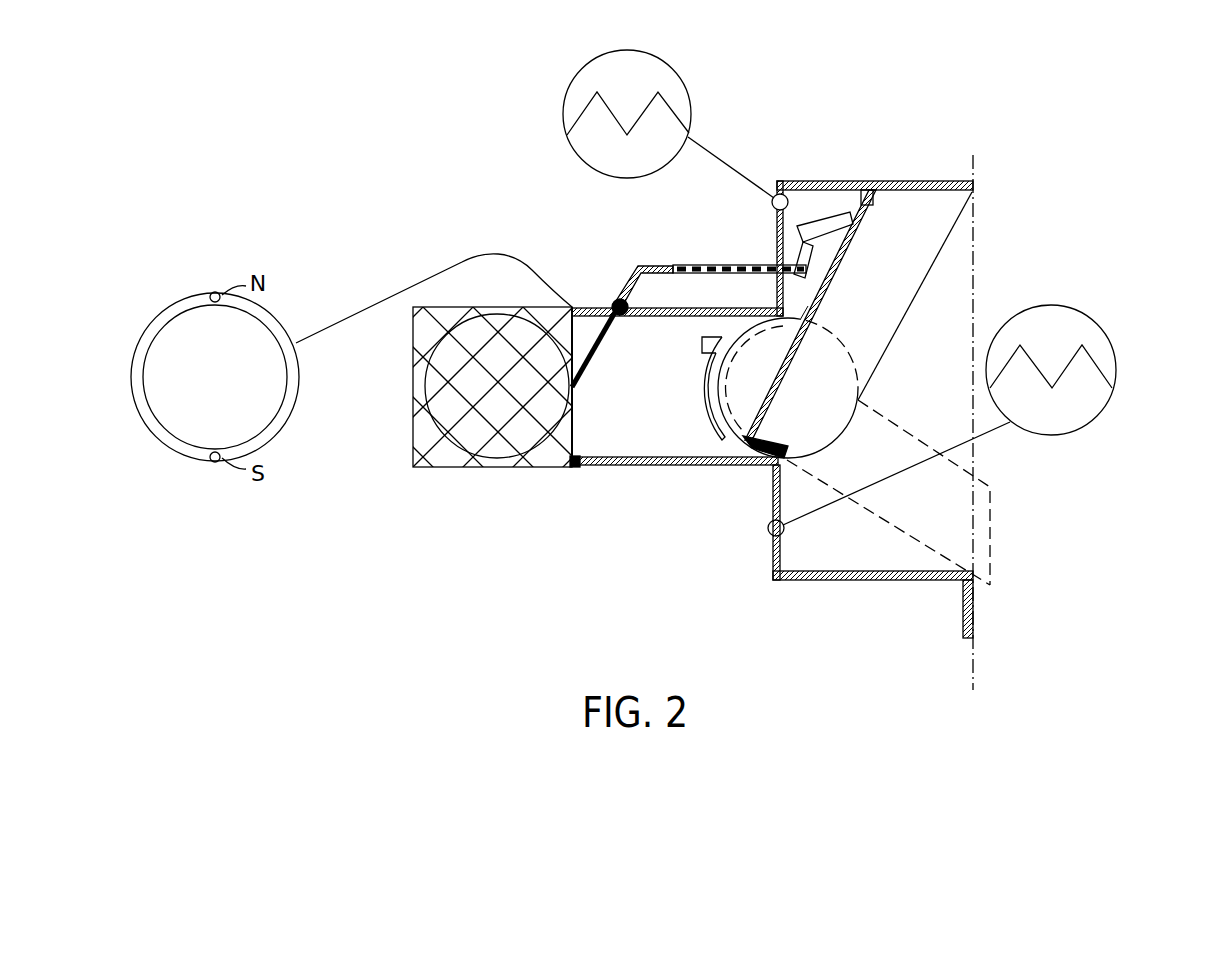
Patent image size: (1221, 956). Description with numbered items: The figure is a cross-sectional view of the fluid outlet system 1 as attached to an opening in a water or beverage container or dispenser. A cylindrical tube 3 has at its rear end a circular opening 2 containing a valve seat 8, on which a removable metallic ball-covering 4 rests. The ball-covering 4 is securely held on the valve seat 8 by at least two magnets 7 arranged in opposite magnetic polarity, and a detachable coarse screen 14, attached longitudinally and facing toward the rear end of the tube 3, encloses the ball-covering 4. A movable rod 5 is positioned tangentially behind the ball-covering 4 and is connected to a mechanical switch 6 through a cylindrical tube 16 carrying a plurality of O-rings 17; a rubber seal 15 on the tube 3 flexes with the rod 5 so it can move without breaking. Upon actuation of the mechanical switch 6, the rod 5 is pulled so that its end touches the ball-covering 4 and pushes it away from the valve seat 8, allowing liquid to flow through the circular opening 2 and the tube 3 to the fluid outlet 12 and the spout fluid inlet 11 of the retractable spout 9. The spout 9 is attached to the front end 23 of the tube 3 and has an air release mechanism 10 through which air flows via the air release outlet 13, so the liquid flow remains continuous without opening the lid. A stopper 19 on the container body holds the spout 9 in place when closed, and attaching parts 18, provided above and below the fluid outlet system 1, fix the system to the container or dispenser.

The fluid outlet system 1 is at (1021, 226).
The circular opening 2 is at (553, 456).
The cylindrical tube 3 is at (668, 447).
The removable metallic ball-covering 4 is at (417, 443).
The movable rod 5 is at (594, 352).
The mechanical switch 6 is at (800, 222).
The magnets 7 is at (575, 468).
The valve seat 8 is at (571, 412).
The retractable spout 9 is at (903, 320).
The air release mechanism 10 is at (796, 316).
The spout fluid inlet 11 is at (783, 462).
The fluid outlet 12 is at (707, 405).
The air release outlet 13 is at (700, 342).
The detachable coarse screen 14 is at (445, 375).
The rubber seal 15 is at (619, 300).
The cylindrical tube 16 is at (716, 264).
The O-rings 17 is at (667, 264).
The attaching parts 18 is at (563, 112).
The stopper 19 is at (868, 186).
The front end 23 is at (740, 445).